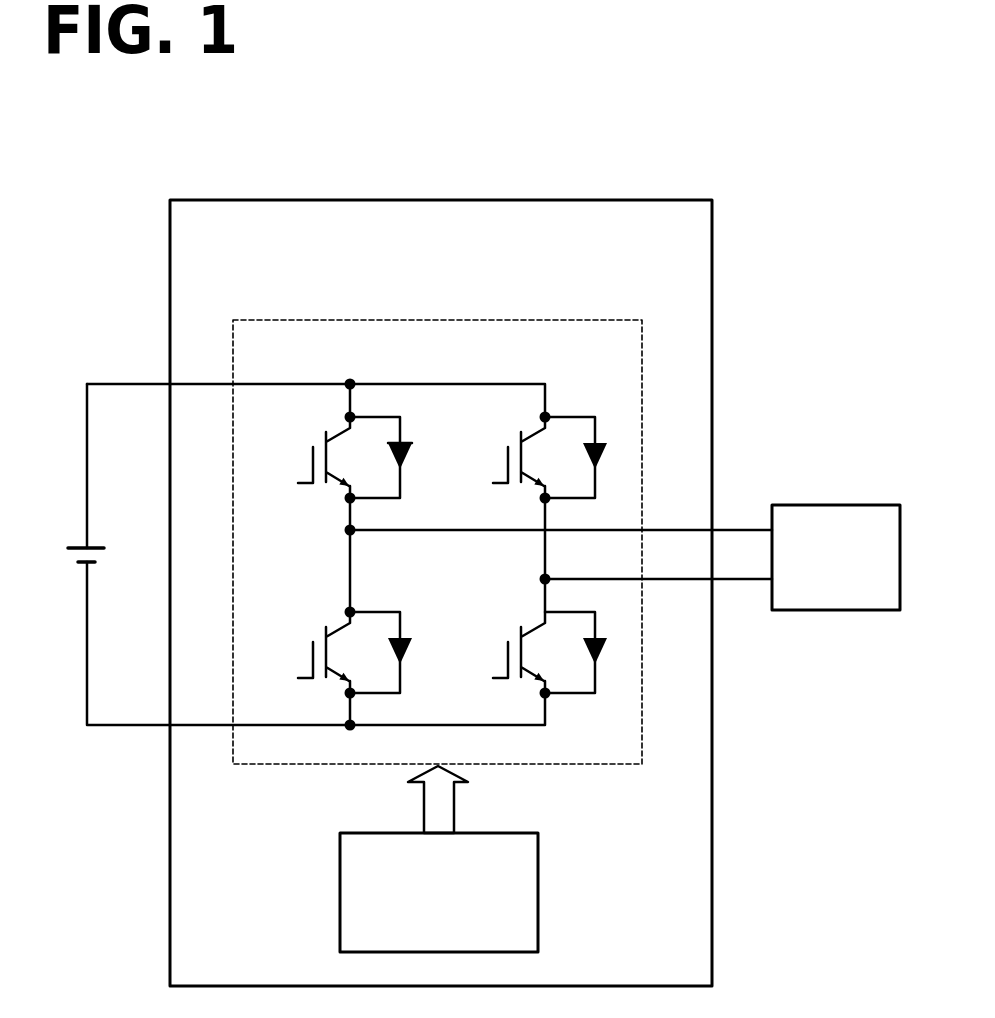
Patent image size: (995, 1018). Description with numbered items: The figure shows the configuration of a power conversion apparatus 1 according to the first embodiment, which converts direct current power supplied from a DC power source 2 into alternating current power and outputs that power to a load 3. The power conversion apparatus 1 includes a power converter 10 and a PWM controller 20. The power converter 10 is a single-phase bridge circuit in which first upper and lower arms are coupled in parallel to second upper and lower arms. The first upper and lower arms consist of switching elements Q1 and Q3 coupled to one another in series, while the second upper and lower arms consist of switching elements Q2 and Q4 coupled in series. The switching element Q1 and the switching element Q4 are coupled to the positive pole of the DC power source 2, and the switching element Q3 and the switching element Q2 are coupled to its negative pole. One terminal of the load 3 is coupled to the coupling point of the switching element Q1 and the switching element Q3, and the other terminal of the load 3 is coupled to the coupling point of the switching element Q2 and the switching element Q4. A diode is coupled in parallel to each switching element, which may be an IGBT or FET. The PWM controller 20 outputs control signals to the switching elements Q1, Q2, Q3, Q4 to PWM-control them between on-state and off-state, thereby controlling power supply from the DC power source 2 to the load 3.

The power conversion apparatus 1 is at (441, 200).
The power converter 10 is at (440, 320).
The DC power source 2 is at (74, 548).
The load 3 is at (836, 505).
The PWM controller 20 is at (538, 895).
The switching element Q1 is at (292, 428).
The switching element Q2 is at (487, 623).
The switching element Q3 is at (292, 623).
The switching element Q4 is at (487, 428).